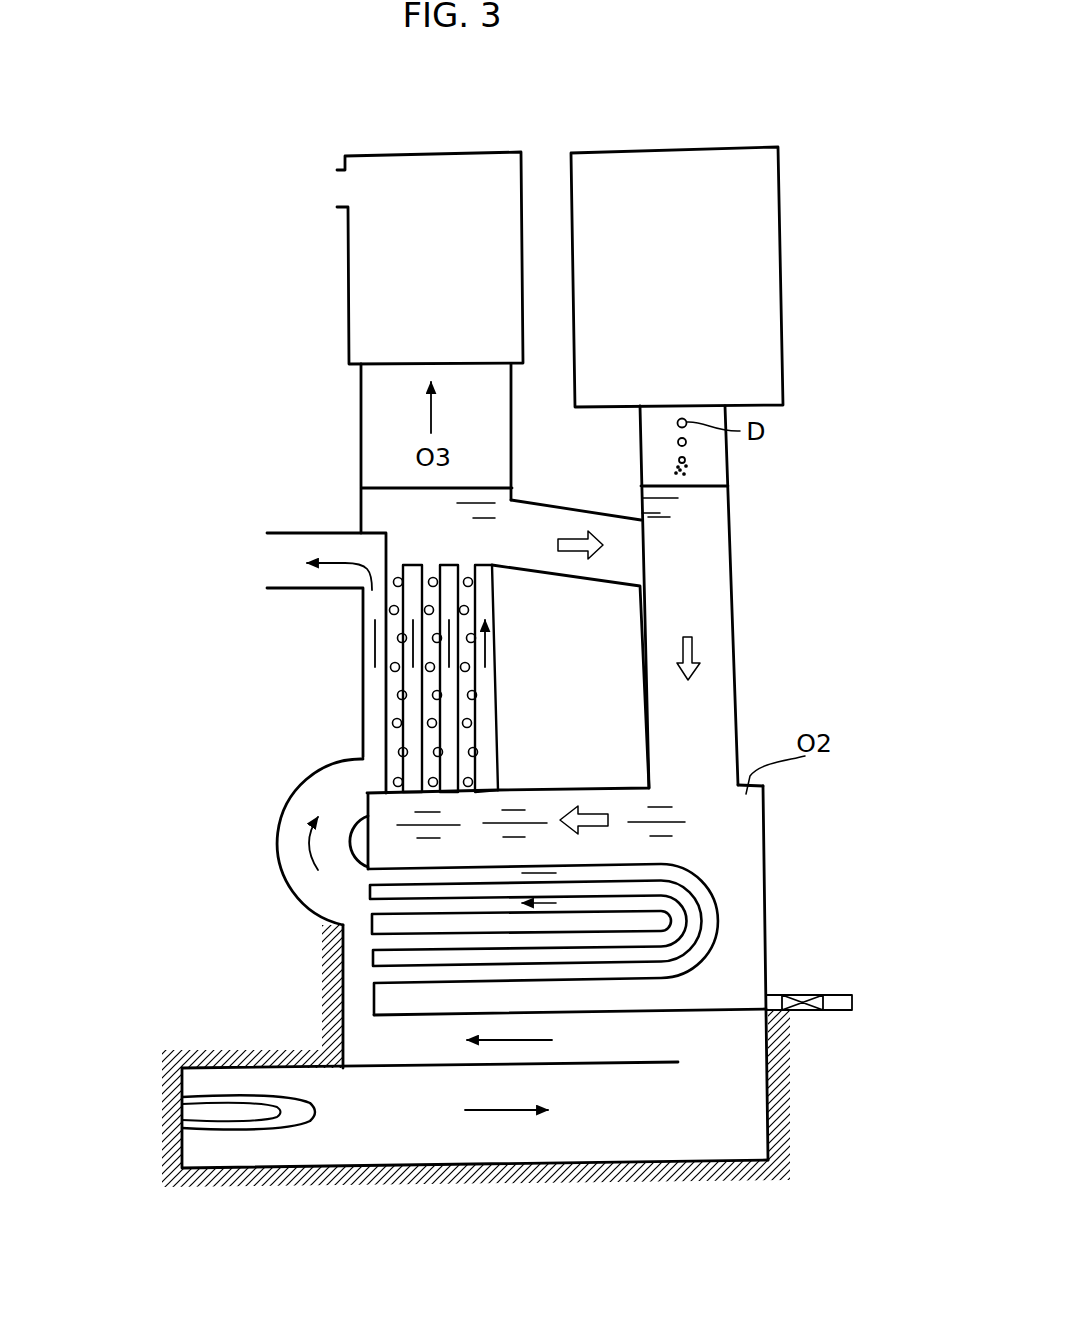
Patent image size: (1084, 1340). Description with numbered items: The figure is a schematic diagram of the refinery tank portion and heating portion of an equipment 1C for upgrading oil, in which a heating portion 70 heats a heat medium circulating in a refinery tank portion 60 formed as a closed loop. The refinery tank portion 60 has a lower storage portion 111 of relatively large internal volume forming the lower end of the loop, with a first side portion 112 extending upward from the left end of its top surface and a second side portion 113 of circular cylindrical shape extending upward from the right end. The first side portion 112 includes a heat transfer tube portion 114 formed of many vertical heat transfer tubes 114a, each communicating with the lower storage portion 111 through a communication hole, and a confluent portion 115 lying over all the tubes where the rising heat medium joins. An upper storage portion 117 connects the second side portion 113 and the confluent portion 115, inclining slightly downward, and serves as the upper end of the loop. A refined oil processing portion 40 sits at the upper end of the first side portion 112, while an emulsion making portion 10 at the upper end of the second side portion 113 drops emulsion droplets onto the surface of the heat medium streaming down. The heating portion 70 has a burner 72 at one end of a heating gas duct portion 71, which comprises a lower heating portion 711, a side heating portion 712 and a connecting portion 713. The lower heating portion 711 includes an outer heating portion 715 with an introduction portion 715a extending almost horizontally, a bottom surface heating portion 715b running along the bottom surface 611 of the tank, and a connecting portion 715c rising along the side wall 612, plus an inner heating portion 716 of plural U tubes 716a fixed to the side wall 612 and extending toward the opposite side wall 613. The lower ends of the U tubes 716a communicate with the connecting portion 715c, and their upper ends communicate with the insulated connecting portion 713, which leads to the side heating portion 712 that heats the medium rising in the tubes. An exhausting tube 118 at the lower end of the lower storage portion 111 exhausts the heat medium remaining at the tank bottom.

The equipment for upgrading oil 1C is at (858, 103).
The refined oil processing portion 40 is at (435, 153).
The emulsion making portion 10 is at (683, 145).
The upper storage portion 117 is at (557, 503).
The refinery tank portion 60 is at (812, 596).
The second side portion 113 is at (740, 667).
The confluent portion 115 is at (457, 540).
The side heating portion 712 is at (321, 637).
The first side portion 112 is at (569, 619).
The heat transfer tube portion 114 is at (485, 742).
The heat transfer tubes 114a is at (427, 712).
The connecting portion 713 is at (297, 786).
The opposite side wall 613 is at (766, 799).
The lower storage portion 111 is at (765, 828).
The inner heating portion 716 is at (690, 862).
The U tubes 716a is at (690, 928).
The lower heating portion 711 is at (714, 962).
The side wall 612 is at (370, 962).
The connecting portion 715c is at (353, 997).
The bottom surface 611 is at (398, 1013).
The exhausting tube 118 is at (827, 994).
The bottom surface heating portion 715b is at (657, 1038).
The heating portion 70 is at (138, 1103).
The heating gas duct portion 71 is at (446, 1169).
The burner 72 is at (250, 1110).
The introduction portion 715a is at (598, 1132).
The outer heating portion 715 is at (706, 1130).